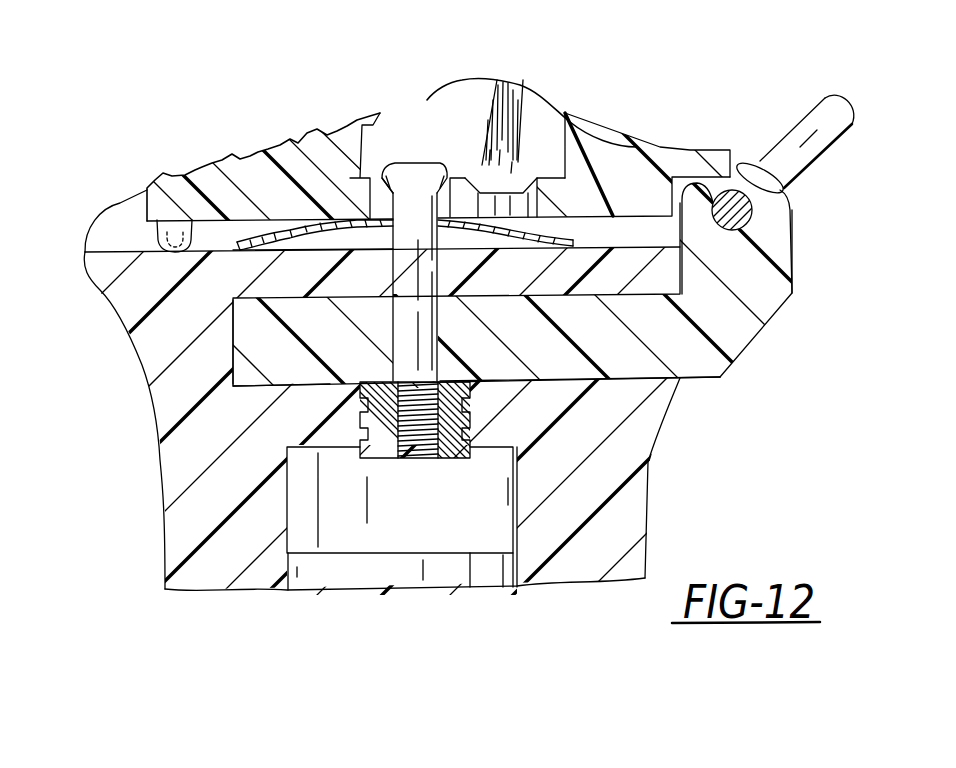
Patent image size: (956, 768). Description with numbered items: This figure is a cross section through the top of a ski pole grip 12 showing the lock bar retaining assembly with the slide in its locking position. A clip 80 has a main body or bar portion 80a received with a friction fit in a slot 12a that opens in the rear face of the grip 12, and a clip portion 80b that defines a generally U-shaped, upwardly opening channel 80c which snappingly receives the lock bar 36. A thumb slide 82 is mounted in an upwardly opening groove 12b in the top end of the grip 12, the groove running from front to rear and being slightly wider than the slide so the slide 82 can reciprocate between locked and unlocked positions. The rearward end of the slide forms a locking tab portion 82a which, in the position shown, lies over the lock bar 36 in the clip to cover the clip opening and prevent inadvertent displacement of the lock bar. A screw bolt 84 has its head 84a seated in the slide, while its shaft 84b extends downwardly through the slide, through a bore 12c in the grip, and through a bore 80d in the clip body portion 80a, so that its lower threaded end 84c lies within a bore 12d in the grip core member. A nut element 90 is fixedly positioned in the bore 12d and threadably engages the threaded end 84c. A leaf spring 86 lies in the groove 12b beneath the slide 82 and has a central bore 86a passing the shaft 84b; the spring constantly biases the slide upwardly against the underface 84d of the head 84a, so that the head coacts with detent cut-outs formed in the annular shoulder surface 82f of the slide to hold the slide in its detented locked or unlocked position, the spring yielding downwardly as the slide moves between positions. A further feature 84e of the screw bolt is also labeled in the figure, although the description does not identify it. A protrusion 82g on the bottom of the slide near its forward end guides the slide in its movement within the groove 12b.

The grip 12 is at (165, 518).
The slot 12a is at (313, 386).
The groove 12b is at (120, 251).
The bore 12c is at (393, 265).
The bore 12d is at (461, 458).
The lock bar 36 is at (760, 162).
The clip 80 is at (737, 364).
The main body or bar portion 80a is at (262, 337).
The clip portion 80b is at (797, 286).
The channel 80c is at (750, 212).
The bore 80d is at (473, 384).
The thumb slide 82 is at (262, 130).
The locking tab portion 82a is at (712, 149).
The annular shoulder surface 82f is at (563, 177).
The protrusion 82g is at (180, 235).
The screw bolt 84 is at (446, 328).
The head 84a is at (430, 162).
The shaft 84b is at (393, 363).
The lower threaded end 84c is at (420, 458).
The underface 84d is at (365, 177).
The bolt washer 84e is at (498, 218).
The leaf spring 86 is at (502, 82).
The central bore 86a is at (308, 220).
The nut element 90 is at (348, 470).